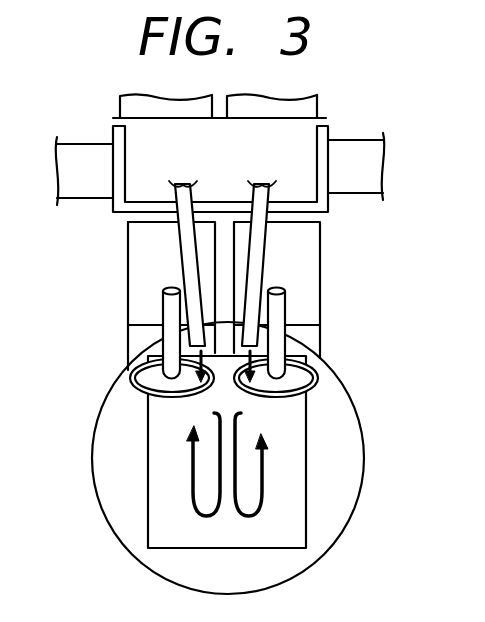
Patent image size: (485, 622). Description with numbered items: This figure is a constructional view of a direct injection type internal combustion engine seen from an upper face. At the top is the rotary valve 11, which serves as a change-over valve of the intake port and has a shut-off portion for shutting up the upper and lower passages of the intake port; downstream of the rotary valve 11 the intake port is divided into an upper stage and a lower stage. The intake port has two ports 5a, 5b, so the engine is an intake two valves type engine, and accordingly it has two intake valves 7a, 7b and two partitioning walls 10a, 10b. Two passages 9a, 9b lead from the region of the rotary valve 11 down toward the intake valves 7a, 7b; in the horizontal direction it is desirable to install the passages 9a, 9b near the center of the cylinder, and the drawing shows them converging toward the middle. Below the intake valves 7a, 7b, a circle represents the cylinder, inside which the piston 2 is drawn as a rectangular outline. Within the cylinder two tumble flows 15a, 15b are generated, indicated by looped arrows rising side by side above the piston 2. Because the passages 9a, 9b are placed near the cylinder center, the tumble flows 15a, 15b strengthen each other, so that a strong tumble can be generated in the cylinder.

The piston 2 is at (306, 427).
The intake port 5a is at (128, 341).
The intake port 5b is at (320, 337).
The intake valve 7a is at (130, 378).
The intake valve 7b is at (297, 377).
The passage 9a is at (176, 256).
The passage 9b is at (268, 252).
The partitioning wall 10a is at (163, 305).
The partitioning wall 10b is at (285, 302).
The rotary valve 11 is at (330, 128).
The tumble flow 15a is at (192, 472).
The tumble flow 15b is at (263, 470).